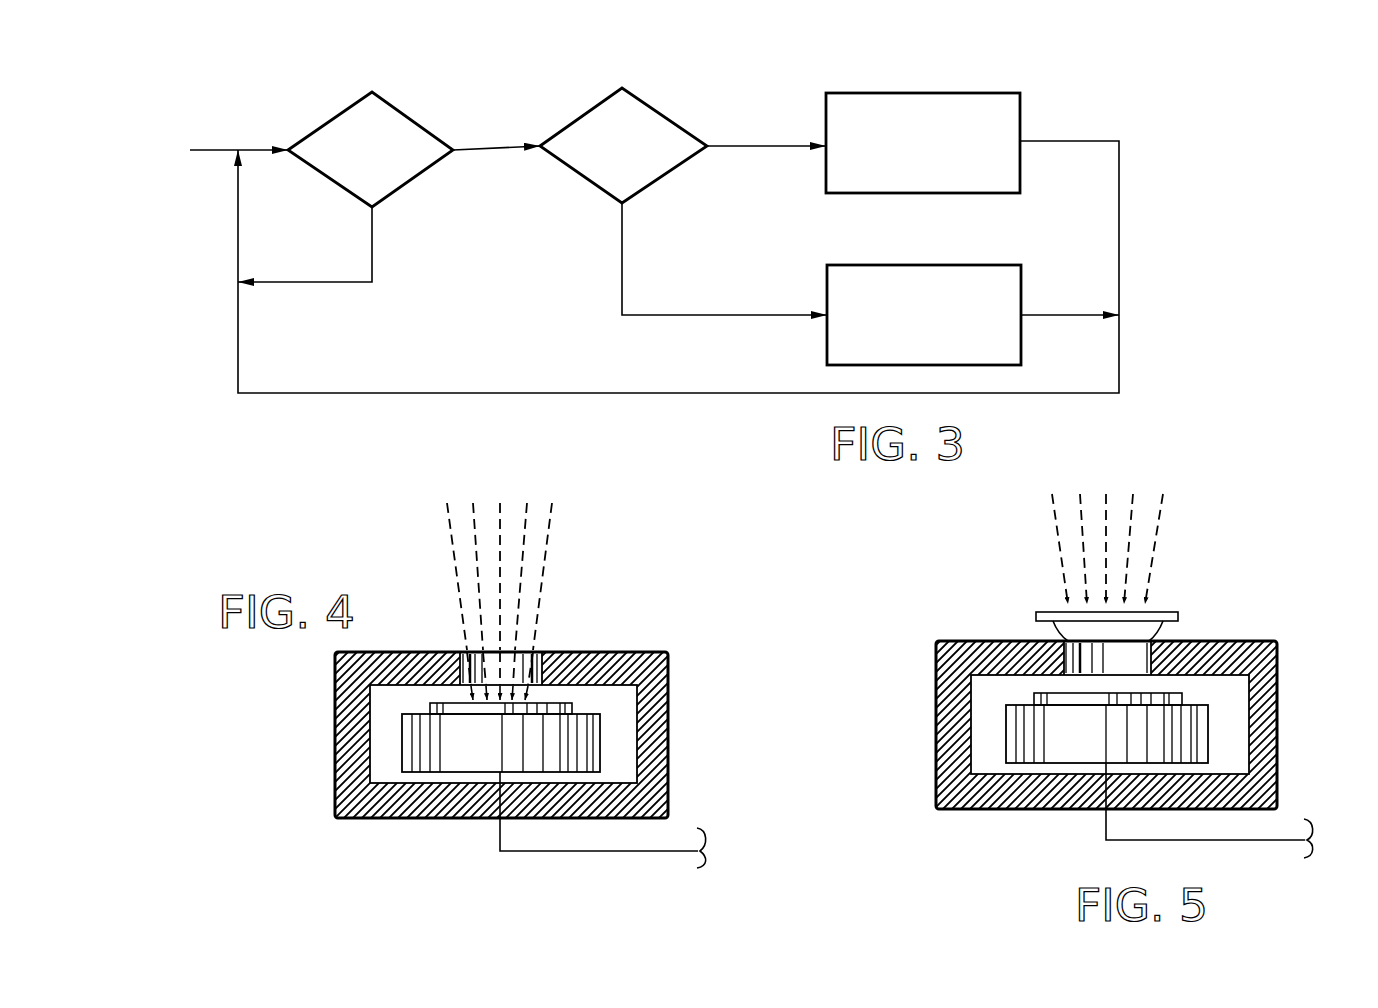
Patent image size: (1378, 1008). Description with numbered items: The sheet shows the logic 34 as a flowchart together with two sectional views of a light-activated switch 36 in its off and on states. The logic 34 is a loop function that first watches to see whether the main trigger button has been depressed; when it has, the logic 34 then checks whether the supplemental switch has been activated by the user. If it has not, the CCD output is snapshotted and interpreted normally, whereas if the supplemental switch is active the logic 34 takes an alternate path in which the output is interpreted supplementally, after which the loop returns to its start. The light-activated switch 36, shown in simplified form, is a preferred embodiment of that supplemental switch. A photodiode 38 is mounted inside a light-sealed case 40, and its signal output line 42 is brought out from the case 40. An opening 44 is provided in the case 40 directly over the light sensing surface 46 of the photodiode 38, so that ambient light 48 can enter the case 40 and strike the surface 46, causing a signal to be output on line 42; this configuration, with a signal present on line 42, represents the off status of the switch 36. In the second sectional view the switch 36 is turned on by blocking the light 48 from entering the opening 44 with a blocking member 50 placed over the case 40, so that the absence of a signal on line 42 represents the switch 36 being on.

In FIG. 3, the logic 34 is at (1137, 327).
In FIG. 4, the light-activated switch 36 is at (532, 700).
In FIG. 5, the light-activated switch 36 is at (1135, 690).
In FIG. 4, the photodiode 38 is at (597, 728).
In FIG. 5, the photodiode 38 is at (1207, 713).
In FIG. 4, the light-sealed case 40 is at (668, 798).
In FIG. 5, the light-sealed case 40 is at (1277, 786).
In FIG. 4, the signal output line 42 is at (635, 851).
In FIG. 5, the signal output line 42 is at (1243, 840).
In FIG. 4, the opening 44 is at (521, 652).
In FIG. 5, the opening 44 is at (1160, 600).
In FIG. 4, the light sensing surface 46 is at (457, 702).
In FIG. 5, the light sensing surface 46 is at (1073, 690).
In FIG. 4, the ambient light 48 is at (542, 570).
In FIG. 5, the ambient light 48 is at (1152, 564).
In FIG. 5, the blocking member 50 is at (1135, 652).